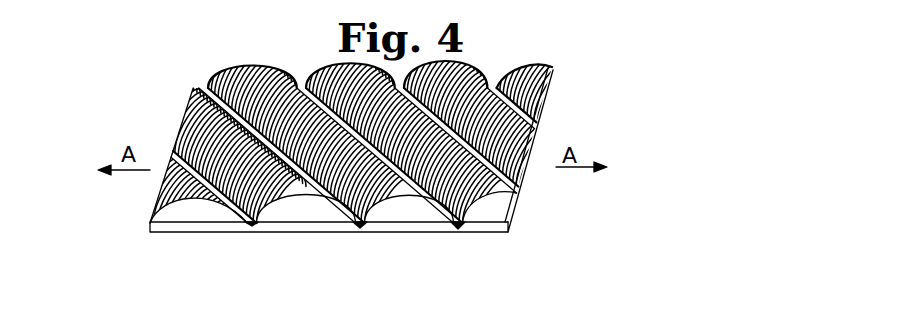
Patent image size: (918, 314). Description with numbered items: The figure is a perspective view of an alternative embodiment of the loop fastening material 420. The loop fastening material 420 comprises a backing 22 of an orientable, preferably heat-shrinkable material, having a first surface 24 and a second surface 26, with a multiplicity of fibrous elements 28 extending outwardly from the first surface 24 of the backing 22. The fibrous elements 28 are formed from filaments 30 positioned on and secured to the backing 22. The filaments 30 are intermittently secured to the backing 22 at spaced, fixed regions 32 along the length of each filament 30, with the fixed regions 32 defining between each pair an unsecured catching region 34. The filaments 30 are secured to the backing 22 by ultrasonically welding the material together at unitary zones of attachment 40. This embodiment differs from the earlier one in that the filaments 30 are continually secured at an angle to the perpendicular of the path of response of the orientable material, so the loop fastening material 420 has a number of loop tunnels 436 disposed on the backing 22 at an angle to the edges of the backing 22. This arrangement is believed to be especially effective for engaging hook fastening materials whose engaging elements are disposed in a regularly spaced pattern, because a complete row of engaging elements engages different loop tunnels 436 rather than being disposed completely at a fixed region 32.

The loop fastening material 420 is at (176, 68).
The backing 22 is at (485, 228).
The first surface 24 is at (503, 214).
The second surface 26 is at (493, 233).
The fibrous elements 28 is at (190, 120).
The filaments 30 is at (491, 92).
The fixed regions 32 is at (251, 224).
The unsecured catching region 34 is at (300, 204).
The unitary zones of attachment 40 is at (461, 228).
The loop tunnels 436 is at (350, 88).